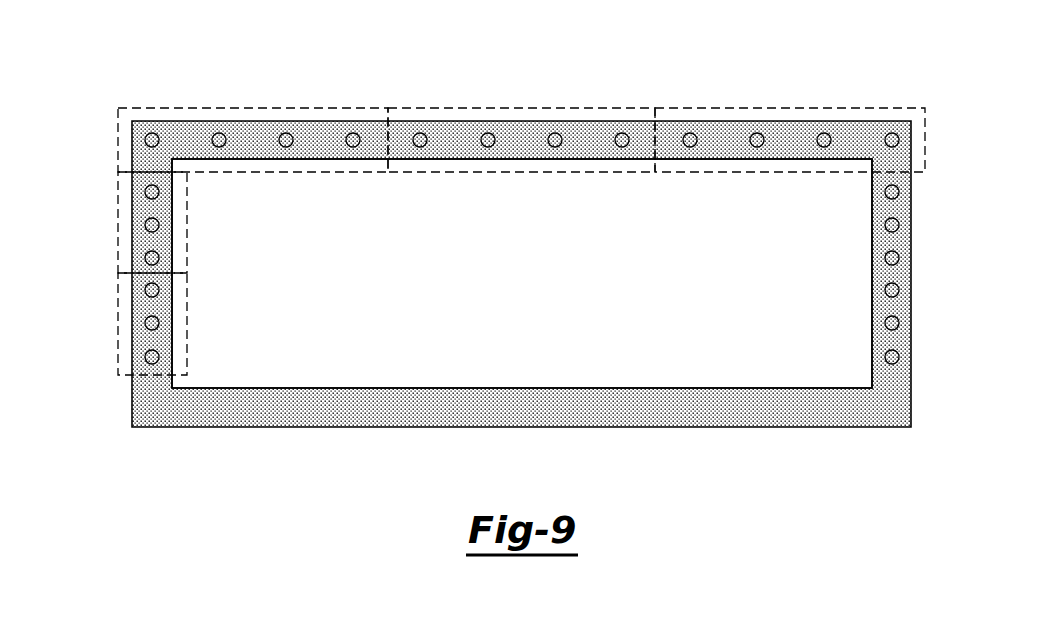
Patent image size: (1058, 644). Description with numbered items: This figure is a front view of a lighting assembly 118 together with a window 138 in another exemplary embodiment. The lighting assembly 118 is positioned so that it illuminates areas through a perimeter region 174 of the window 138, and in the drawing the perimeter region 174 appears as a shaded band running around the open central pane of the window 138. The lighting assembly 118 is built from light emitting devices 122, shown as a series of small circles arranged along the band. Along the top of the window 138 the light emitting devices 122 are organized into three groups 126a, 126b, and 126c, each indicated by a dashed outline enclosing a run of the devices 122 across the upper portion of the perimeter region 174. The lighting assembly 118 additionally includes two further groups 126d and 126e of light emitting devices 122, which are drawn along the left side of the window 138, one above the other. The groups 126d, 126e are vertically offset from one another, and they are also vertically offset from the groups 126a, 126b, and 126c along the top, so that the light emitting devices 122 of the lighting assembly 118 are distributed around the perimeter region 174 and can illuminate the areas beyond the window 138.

The lighting assembly 118 is at (504, 246).
The light emitting devices 122 is at (219, 130).
The group of light emitting devices 126a is at (545, 108).
The group of light emitting devices 126b is at (277, 108).
The group of light emitting devices 126c is at (722, 108).
The group of light emitting devices 126d is at (118, 221).
The group of light emitting devices 126e is at (118, 326).
The window 138 is at (848, 283).
The perimeter region 174 is at (770, 410).